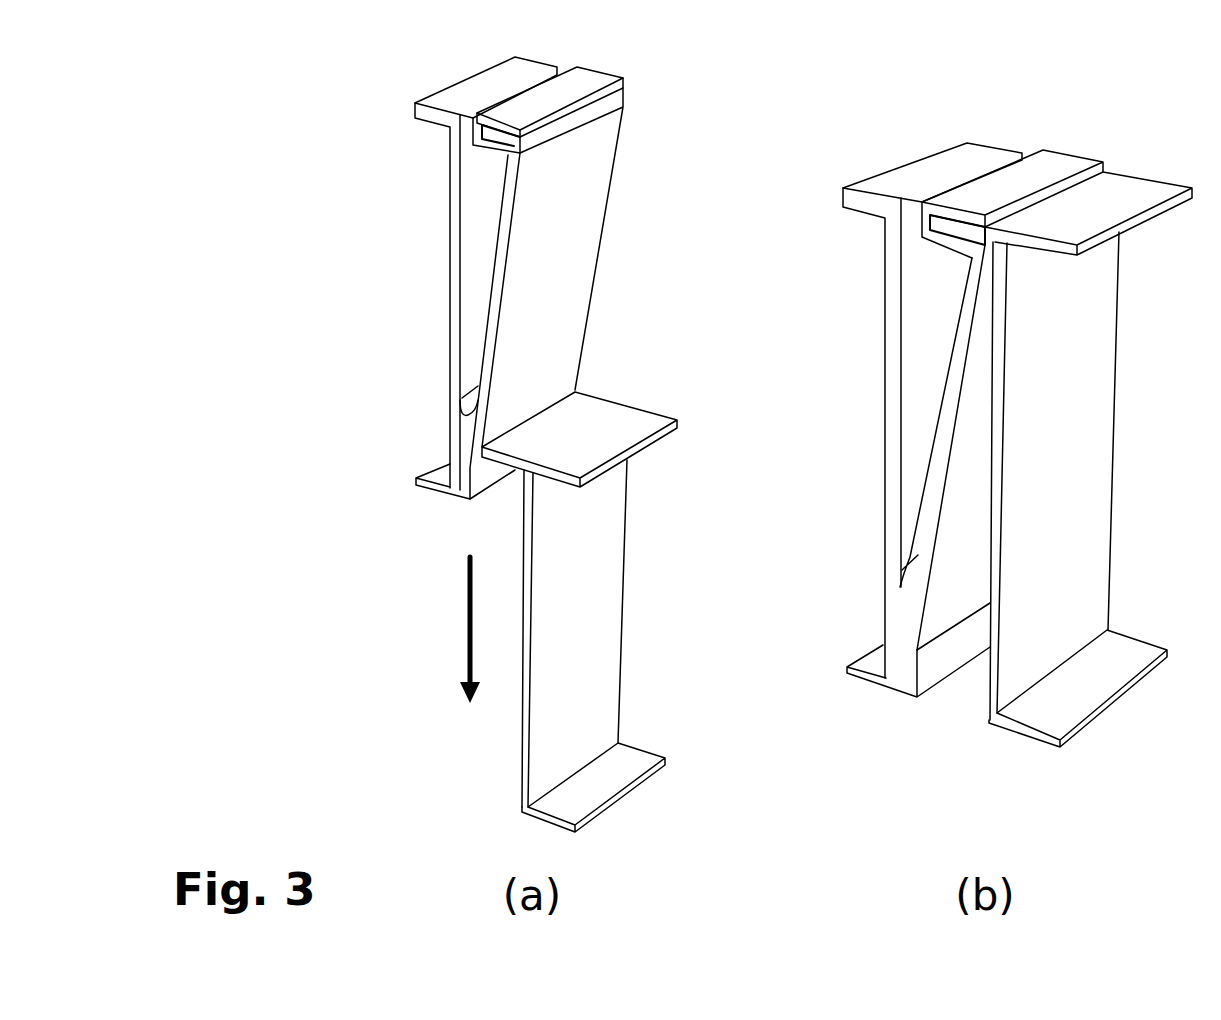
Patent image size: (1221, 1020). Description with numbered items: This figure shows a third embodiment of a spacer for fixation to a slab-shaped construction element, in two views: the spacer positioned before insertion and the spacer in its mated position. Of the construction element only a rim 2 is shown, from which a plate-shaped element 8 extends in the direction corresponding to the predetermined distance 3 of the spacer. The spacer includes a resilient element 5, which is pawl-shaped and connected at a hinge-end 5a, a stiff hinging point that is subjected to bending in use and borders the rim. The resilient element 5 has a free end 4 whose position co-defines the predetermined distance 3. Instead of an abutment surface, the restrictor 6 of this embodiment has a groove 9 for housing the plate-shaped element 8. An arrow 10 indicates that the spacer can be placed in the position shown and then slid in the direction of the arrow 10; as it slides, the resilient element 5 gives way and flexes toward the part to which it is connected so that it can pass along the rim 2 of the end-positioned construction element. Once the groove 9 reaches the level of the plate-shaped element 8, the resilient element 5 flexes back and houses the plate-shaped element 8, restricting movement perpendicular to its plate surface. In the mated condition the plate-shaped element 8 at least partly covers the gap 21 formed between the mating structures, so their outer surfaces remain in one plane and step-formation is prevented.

The rim 2 is at (817, 447).
The predetermined distance 3 is at (558, 15).
The free end 4 is at (487, 144).
The resilient element 5 is at (593, 229).
The hinge-end 5a is at (468, 414).
The restrictor 6 is at (1053, 167).
The plate-shaped element 8 is at (495, 457).
The groove 9 is at (487, 144).
The arrow 10 is at (470, 618).
The gap 21 is at (967, 687).